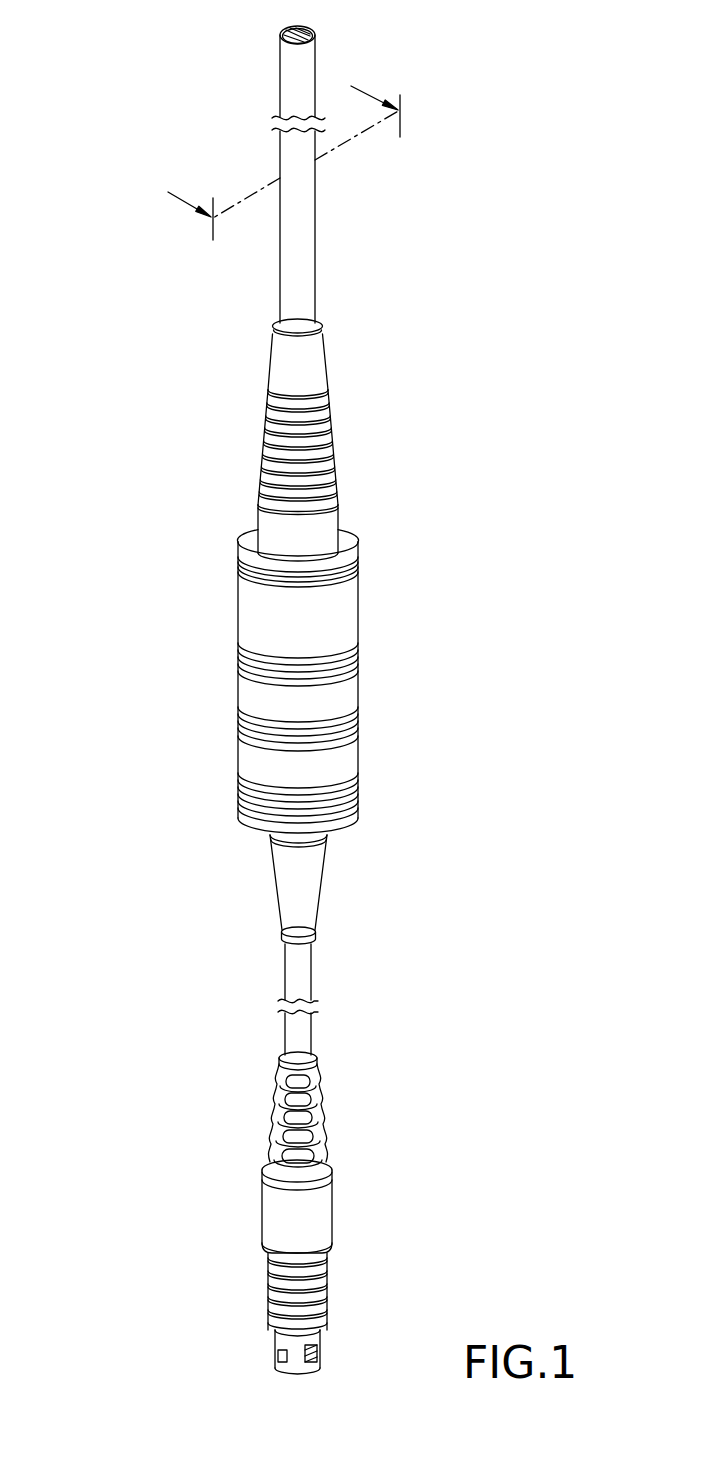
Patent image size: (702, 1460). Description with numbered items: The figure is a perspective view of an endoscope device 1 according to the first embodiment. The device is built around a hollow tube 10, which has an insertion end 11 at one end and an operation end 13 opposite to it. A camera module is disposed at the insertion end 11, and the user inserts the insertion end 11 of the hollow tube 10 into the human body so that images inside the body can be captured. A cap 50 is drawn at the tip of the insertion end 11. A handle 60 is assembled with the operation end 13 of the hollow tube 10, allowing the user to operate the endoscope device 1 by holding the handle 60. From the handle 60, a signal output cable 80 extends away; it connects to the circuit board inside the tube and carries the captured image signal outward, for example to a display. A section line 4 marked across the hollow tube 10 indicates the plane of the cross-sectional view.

The endoscope device 1 is at (112, 48).
The hollow tube 10 is at (280, 268).
The insertion end 11 is at (287, 60).
The operation end 13 is at (297, 322).
The cap 50 is at (290, 28).
The handle 60 is at (254, 620).
The signal output cable 80 is at (313, 1210).
The line 4- 4 is at (271, 158).